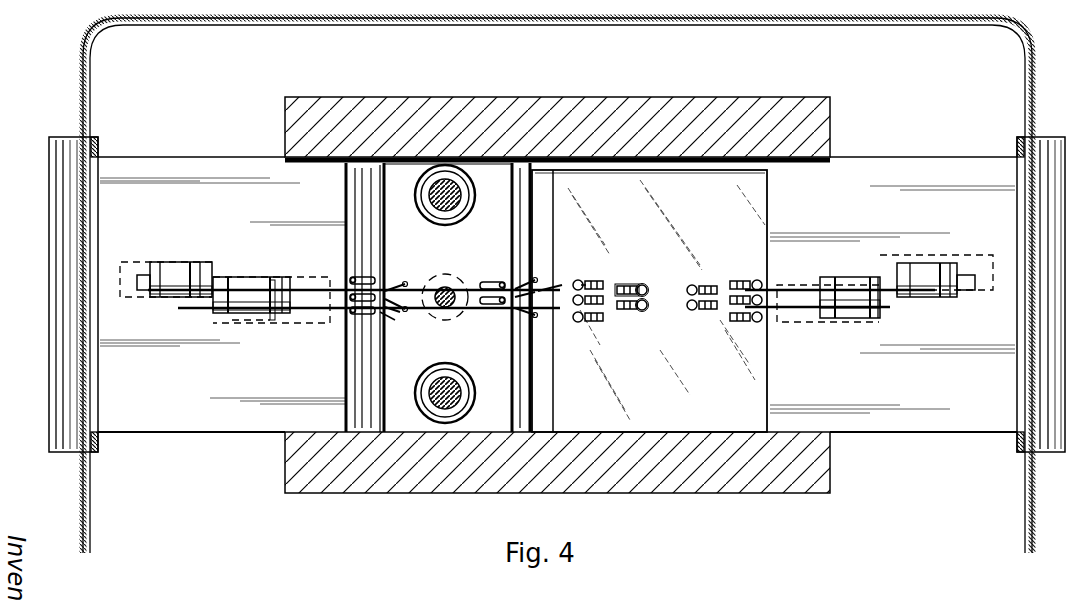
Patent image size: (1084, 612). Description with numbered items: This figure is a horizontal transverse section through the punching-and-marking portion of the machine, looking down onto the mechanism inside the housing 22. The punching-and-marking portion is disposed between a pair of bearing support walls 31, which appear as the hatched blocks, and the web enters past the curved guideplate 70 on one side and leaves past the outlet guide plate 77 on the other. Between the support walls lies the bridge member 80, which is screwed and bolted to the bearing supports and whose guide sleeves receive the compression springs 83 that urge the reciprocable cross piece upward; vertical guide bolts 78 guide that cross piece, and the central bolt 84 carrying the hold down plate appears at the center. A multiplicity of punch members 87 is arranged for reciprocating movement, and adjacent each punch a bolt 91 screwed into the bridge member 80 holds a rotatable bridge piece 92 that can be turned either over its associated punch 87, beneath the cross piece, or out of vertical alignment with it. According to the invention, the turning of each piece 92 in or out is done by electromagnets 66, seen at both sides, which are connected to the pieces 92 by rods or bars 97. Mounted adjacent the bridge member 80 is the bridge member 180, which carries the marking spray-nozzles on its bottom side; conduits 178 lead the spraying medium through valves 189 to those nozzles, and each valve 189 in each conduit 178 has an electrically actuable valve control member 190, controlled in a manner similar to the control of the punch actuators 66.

The housing 22 is at (366, 27).
The bearing support walls 31 is at (540, 97).
The electromagnets 66 is at (184, 270).
The curved guideplate 70 is at (71, 440).
The outlet guide plate 77 is at (1048, 440).
The vertical guide bolts 78 is at (449, 386).
The bridge member 80 is at (500, 239).
The compression springs 83 is at (462, 382).
The central bolt 84 is at (451, 288).
The punch members 87 is at (406, 284).
The bolt 91 is at (385, 312).
The rotatable bridge piece 92 is at (380, 280).
The rods or bars 97 is at (300, 305).
The conduits 178 is at (625, 287).
The bridge member 180 is at (758, 370).
The valves 189 is at (641, 285).
The valve control members 190 is at (640, 311).